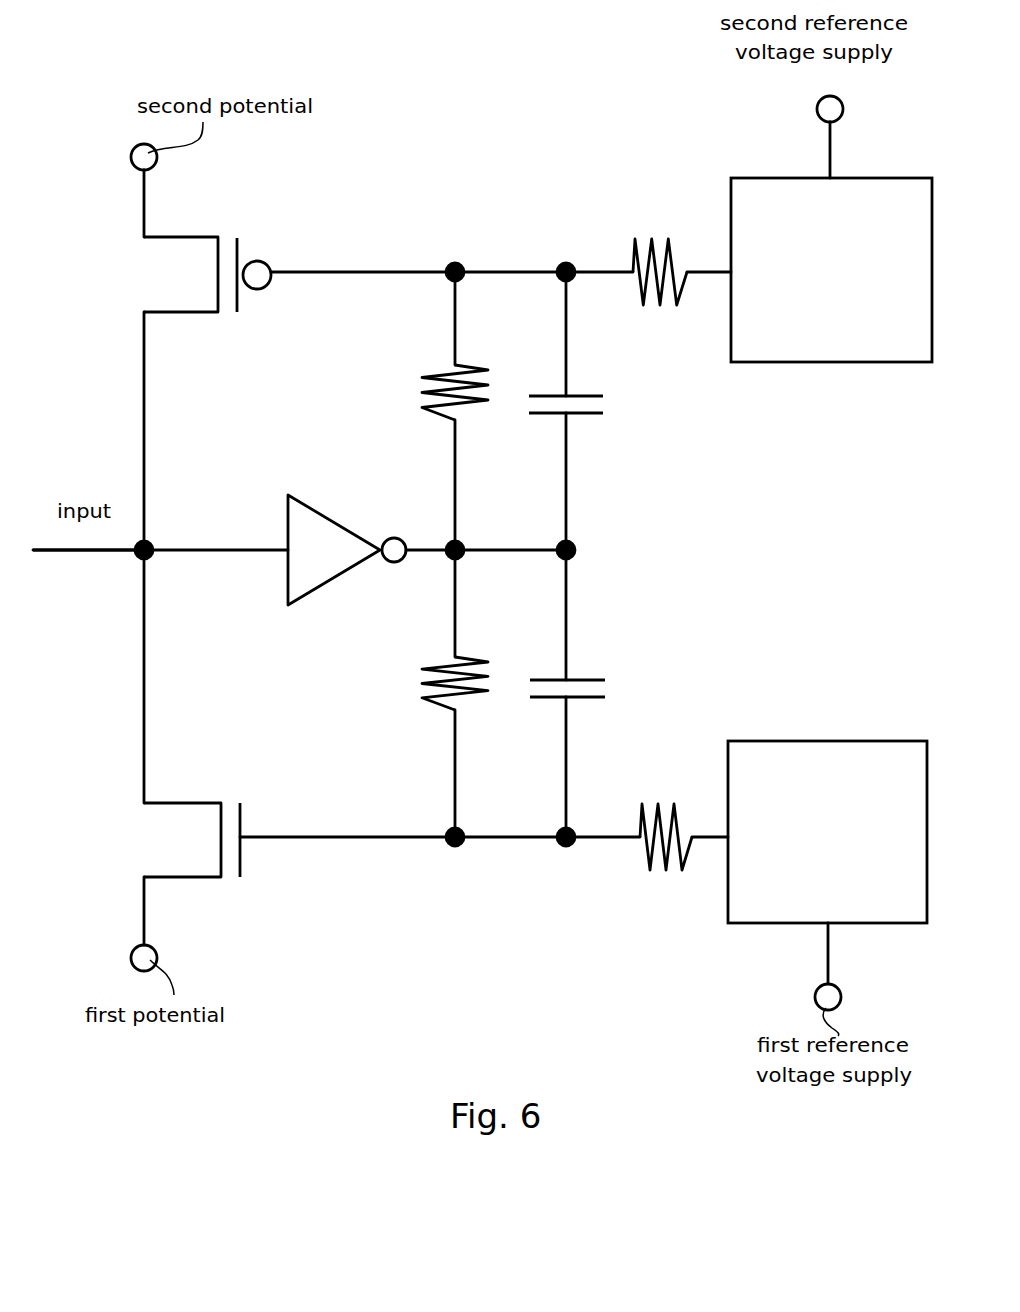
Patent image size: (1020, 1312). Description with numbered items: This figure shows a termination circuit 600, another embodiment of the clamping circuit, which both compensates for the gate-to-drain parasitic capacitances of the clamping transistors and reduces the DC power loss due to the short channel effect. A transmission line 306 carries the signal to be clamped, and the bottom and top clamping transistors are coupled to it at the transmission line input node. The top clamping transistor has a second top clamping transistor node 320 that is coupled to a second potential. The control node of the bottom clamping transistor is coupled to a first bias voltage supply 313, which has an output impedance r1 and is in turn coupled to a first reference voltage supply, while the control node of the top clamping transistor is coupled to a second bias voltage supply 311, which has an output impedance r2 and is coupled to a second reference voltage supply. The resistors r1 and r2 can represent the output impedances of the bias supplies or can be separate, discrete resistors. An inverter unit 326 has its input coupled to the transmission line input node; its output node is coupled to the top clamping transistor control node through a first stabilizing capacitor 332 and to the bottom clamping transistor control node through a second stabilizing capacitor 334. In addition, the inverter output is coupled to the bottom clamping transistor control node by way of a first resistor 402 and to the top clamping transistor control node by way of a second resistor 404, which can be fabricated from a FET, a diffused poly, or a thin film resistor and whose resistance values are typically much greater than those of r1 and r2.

The transmission line 306 is at (85, 553).
The second bias voltage supply 311 is at (831, 270).
The first bias voltage supply 313 is at (827, 832).
The second top clamping transistor node 320 is at (221, 842).
The inverter unit 326 is at (347, 550).
The first stabilizing capacitor 332 is at (218, 264).
The second stabilizing capacitor 334 is at (585, 678).
The first resistor 402 is at (441, 706).
The second resistor 404 is at (440, 376).
The output impedance of first bias voltage supply r1 is at (678, 802).
The output impedance of second bias voltage supply r2 is at (656, 240).
The termination circuit 600 is at (314, 1069).